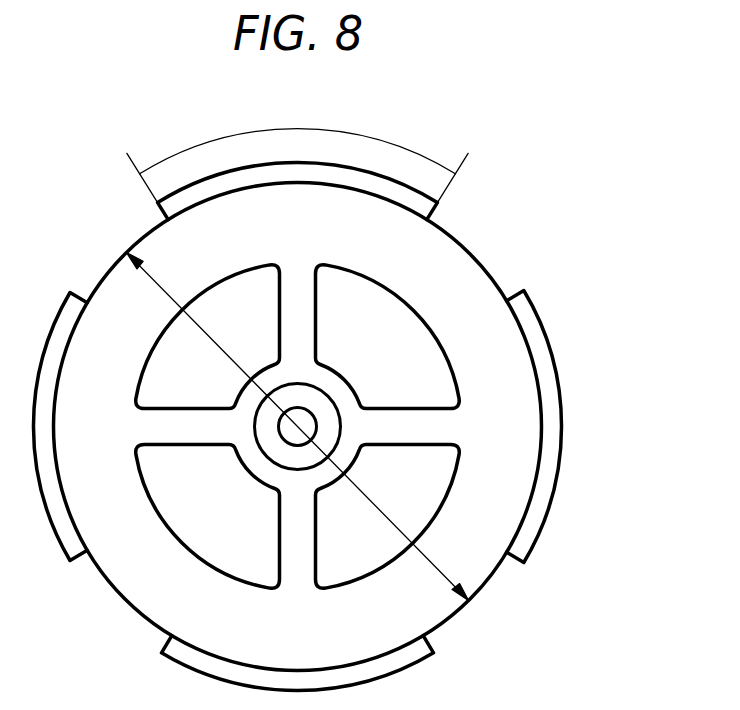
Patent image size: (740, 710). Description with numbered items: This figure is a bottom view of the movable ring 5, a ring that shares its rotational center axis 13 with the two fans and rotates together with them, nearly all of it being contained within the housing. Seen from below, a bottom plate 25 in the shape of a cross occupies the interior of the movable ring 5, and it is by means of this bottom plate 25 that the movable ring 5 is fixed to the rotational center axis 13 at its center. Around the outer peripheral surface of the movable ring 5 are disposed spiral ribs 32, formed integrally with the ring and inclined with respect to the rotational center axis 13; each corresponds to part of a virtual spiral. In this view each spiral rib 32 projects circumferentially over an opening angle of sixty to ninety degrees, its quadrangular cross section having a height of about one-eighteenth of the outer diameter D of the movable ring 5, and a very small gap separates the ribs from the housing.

The movable ring 5 is at (508, 377).
The rotational center axis 13 is at (281, 438).
The bottom plate 25 is at (330, 478).
The spiral ribs 32 is at (428, 205).
The outer diameter D is at (125, 266).